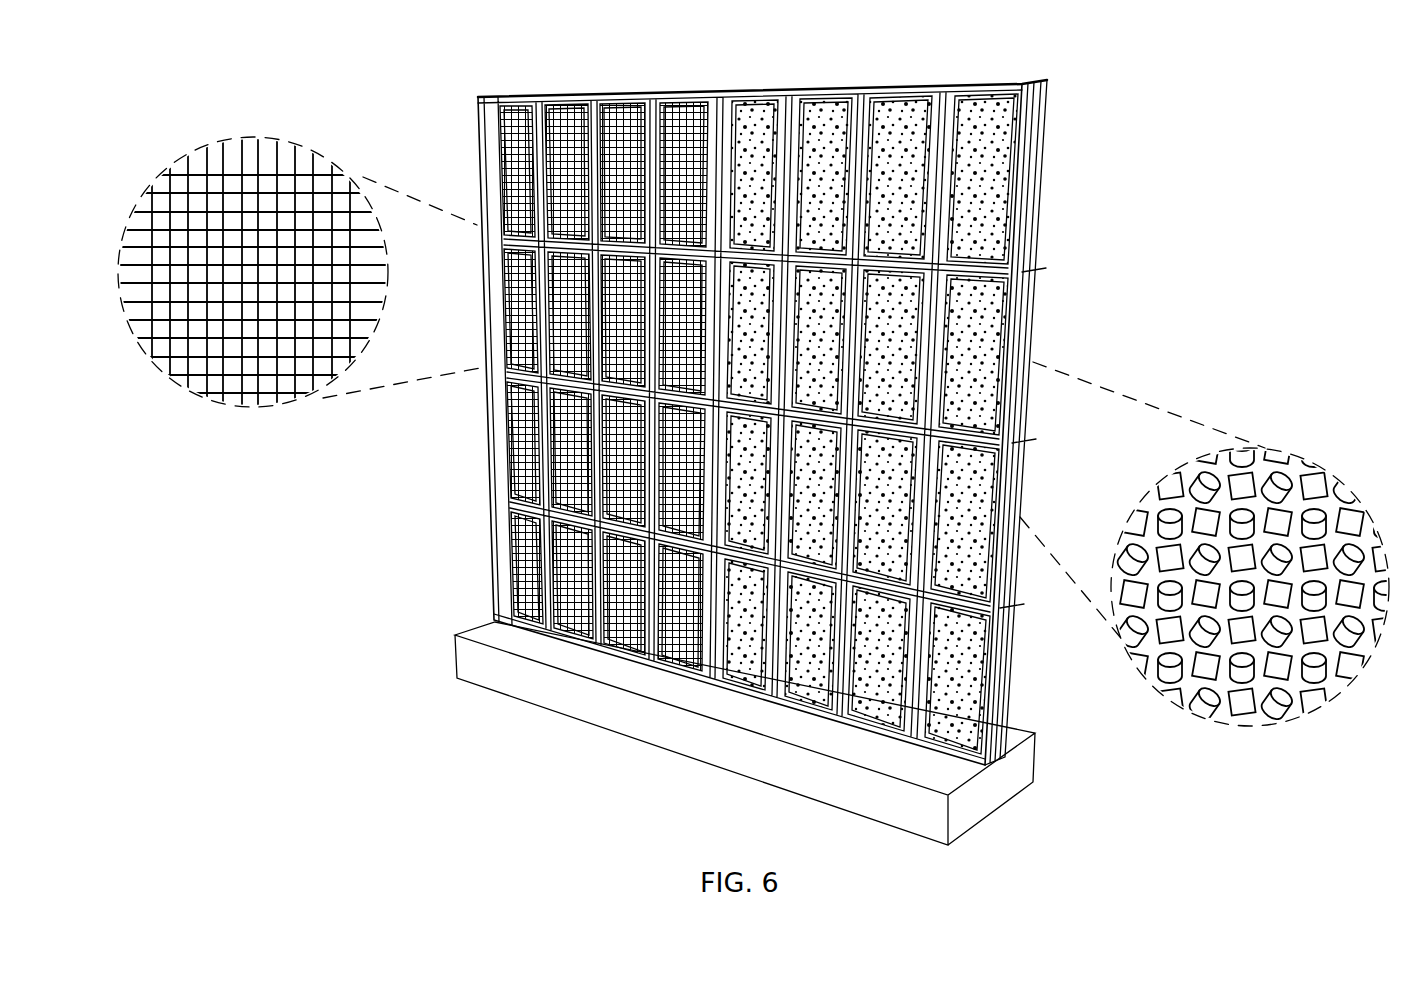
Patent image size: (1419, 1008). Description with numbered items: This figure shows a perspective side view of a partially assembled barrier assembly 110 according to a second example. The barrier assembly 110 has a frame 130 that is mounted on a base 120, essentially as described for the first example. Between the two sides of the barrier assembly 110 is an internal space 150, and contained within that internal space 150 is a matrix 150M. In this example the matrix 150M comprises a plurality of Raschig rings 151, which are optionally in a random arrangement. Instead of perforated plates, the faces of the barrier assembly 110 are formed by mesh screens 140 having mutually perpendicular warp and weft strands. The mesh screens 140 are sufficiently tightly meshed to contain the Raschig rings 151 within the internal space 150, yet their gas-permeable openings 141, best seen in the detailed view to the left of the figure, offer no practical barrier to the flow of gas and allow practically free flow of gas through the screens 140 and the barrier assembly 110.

The barrier assembly 110 is at (1097, 102).
The base 120 is at (978, 800).
The frame 130 is at (1007, 653).
The mesh screens 140 is at (517, 167).
The gas-permeable openings 141 is at (193, 198).
The internal space 150 is at (480, 88).
The matrix 150M is at (1267, 437).
The Raschig rings 151 is at (1317, 500).